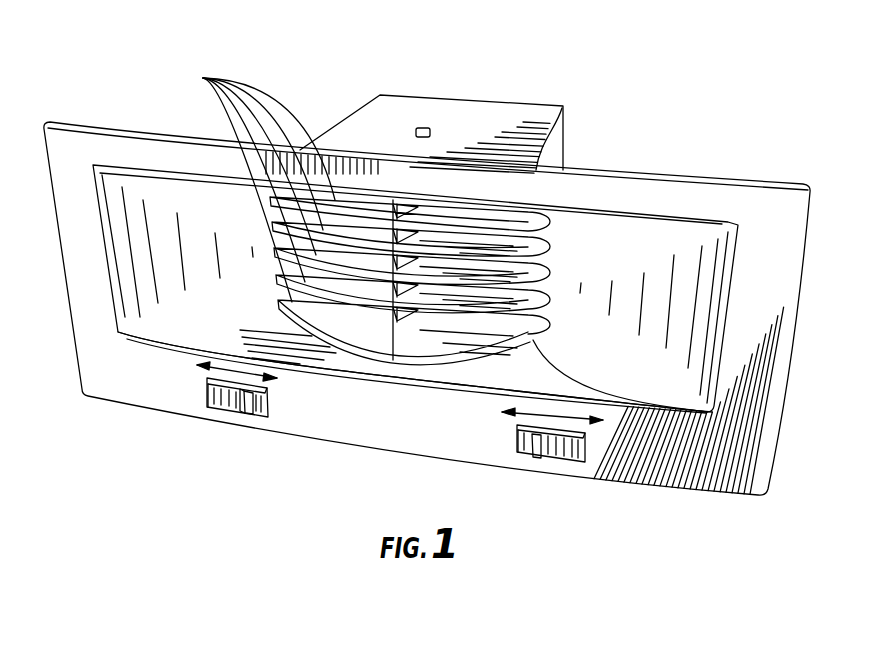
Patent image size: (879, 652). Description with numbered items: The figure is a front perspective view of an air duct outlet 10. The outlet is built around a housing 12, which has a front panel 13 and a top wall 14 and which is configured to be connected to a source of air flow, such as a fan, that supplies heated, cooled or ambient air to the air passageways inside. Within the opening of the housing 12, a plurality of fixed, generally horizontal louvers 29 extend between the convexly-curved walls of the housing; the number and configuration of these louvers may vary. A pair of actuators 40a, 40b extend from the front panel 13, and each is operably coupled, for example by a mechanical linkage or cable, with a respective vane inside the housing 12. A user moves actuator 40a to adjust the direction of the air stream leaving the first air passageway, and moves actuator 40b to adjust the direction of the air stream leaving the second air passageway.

The air duct outlet 10 is at (678, 99).
The housing 12 is at (482, 102).
The front panel 13 is at (345, 408).
The top wall 14 is at (397, 105).
The fixed louvers 29 is at (254, 185).
The actuator 40a is at (537, 458).
The actuator 40b is at (247, 420).